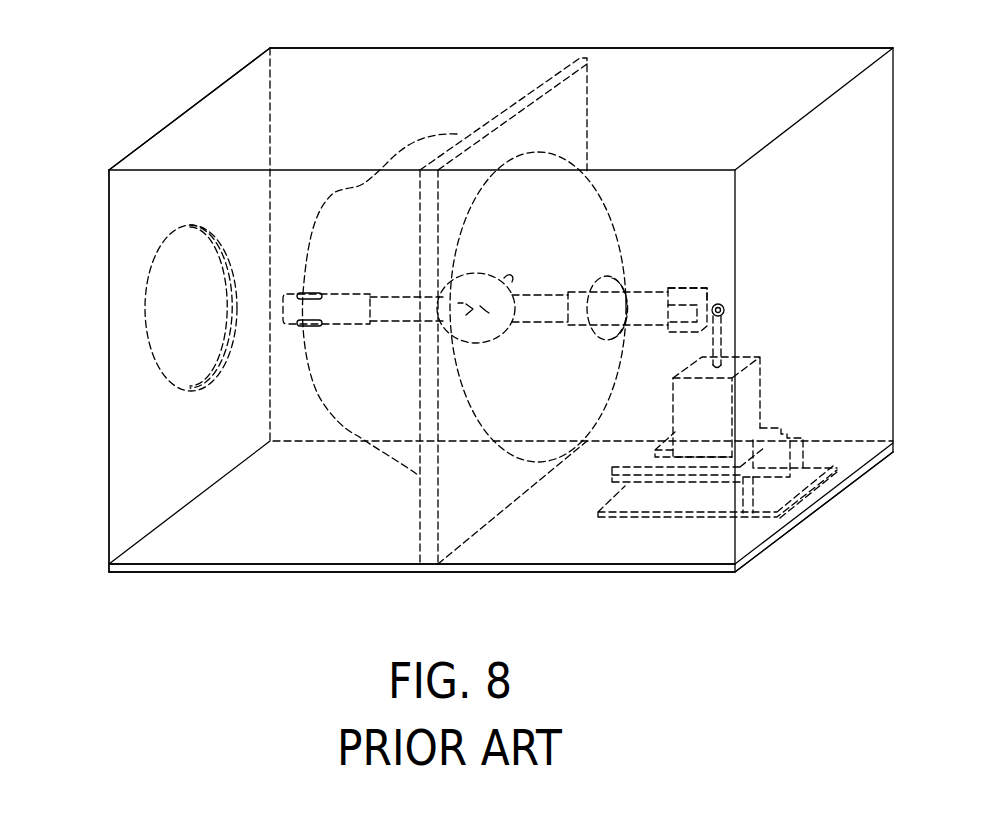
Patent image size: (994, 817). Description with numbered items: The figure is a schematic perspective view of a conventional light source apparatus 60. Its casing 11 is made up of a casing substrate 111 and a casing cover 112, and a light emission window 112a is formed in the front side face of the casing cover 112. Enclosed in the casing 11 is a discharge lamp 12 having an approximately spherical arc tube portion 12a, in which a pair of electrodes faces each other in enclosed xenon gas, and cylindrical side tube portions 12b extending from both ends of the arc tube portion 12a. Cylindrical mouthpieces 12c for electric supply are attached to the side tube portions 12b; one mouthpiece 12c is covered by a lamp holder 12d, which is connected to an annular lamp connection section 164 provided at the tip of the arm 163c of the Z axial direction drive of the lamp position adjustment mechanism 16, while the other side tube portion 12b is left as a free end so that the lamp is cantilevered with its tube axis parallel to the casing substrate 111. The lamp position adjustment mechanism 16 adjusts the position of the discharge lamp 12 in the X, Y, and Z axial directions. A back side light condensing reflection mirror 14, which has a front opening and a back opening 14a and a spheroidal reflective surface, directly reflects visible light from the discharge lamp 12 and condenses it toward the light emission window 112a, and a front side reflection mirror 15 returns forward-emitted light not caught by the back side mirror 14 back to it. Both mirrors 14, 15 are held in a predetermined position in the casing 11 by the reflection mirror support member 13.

The casing 11 is at (108, 455).
The light source apparatus 60 is at (537, 47).
The casing substrate 111 is at (320, 565).
The casing cover 112 is at (109, 415).
The light emission window 112a is at (157, 298).
The discharge lamp 12 is at (495, 308).
The arc tube portion 12a is at (480, 344).
The side tube portions 12b is at (388, 324).
The mouthpieces 12c is at (338, 324).
The lamp holder 12d is at (695, 288).
The reflection mirror support member 13 is at (568, 110).
The back side light condensing reflection mirror 14 is at (607, 205).
The back opening 14a is at (601, 275).
The front side reflection mirror 15 is at (362, 438).
The lamp position adjustment mechanism 16 is at (767, 401).
The arm 163c is at (718, 336).
The lamp connection section 164 is at (718, 303).